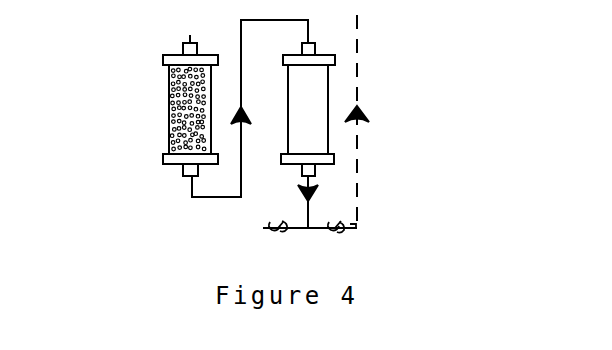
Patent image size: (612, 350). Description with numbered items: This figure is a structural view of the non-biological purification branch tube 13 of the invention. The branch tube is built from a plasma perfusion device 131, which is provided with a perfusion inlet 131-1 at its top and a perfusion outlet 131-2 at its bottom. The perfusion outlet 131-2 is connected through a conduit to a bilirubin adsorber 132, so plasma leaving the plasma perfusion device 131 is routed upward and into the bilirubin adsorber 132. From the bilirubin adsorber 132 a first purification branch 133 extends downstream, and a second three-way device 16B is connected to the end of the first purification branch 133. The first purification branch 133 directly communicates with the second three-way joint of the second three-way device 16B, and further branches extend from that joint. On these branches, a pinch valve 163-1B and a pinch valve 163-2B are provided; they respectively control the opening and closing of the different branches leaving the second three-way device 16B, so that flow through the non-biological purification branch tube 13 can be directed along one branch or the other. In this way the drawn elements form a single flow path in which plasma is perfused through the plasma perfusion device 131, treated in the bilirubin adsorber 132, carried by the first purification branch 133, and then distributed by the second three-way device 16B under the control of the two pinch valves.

The non-biological purification branch tube 13 is at (388, 95).
The plasma perfusion device 131 is at (185, 110).
The perfusion inlet 131-1 is at (188, 53).
The perfusion outlet 131-2 is at (188, 172).
The bilirubin adsorber 132 is at (308, 108).
The first purification branch 133 is at (307, 169).
The pinch valve 163-1B is at (340, 222).
The pinch valve 163-2B is at (268, 230).
The second three-way device 16B is at (308, 228).